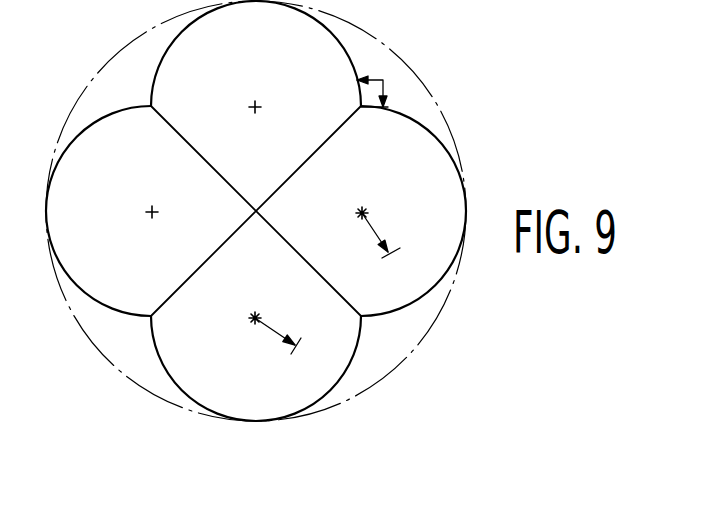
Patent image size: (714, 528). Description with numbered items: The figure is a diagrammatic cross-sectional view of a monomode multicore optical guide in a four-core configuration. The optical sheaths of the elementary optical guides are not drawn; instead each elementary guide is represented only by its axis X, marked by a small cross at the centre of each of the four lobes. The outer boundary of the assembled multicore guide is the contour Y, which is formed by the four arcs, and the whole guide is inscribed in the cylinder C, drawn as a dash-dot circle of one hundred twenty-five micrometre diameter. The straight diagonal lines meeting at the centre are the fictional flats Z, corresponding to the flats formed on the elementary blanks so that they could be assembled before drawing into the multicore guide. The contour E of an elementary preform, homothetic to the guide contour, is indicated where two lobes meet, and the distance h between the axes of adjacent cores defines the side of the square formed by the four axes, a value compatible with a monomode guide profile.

The axis of elementary optical guide X is at (252, 100).
The fictional flat Z is at (280, 188).
The contour of elementary preform E is at (380, 84).
The distance between axes of adjacent elementary guide cores h is at (327, 283).
The contour of multicore guide Y is at (157, 353).
The cylinder C is at (410, 357).